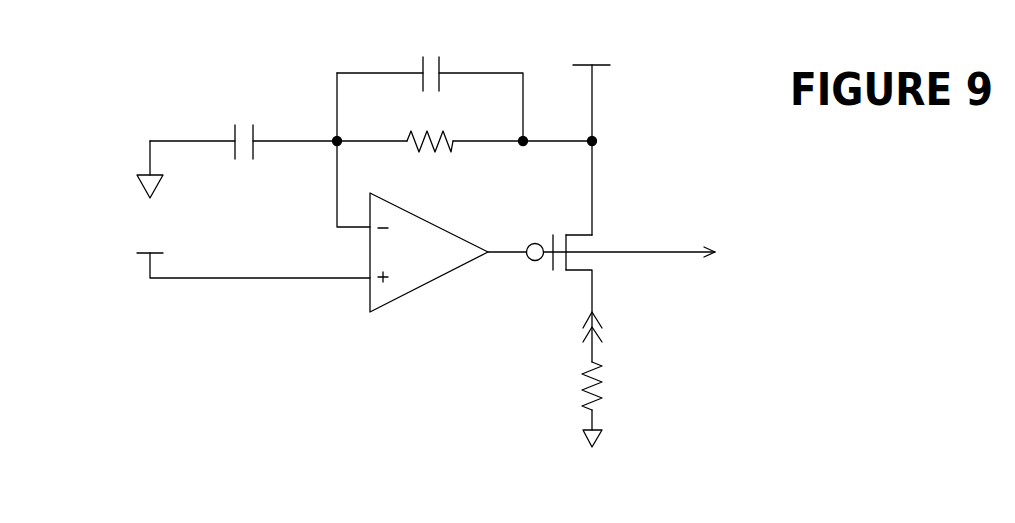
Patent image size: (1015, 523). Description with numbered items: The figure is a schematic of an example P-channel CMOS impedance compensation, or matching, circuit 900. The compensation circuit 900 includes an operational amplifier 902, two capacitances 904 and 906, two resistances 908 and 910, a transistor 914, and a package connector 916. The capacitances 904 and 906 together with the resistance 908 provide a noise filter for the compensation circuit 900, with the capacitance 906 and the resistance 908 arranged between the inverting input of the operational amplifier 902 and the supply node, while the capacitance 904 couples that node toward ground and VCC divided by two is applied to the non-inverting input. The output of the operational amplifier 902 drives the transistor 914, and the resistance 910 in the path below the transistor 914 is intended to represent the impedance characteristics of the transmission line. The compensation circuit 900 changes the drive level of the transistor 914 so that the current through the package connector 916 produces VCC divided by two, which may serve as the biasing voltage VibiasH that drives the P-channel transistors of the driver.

The impedance compensation circuit 900 is at (833, 168).
The operational amplifier 902 is at (422, 288).
The capacitance 904 is at (254, 129).
The capacitance 906 is at (441, 62).
The resistance 908 is at (454, 139).
The resistance 910 is at (604, 385).
The transistor 914 is at (569, 274).
The package connector 916 is at (600, 326).